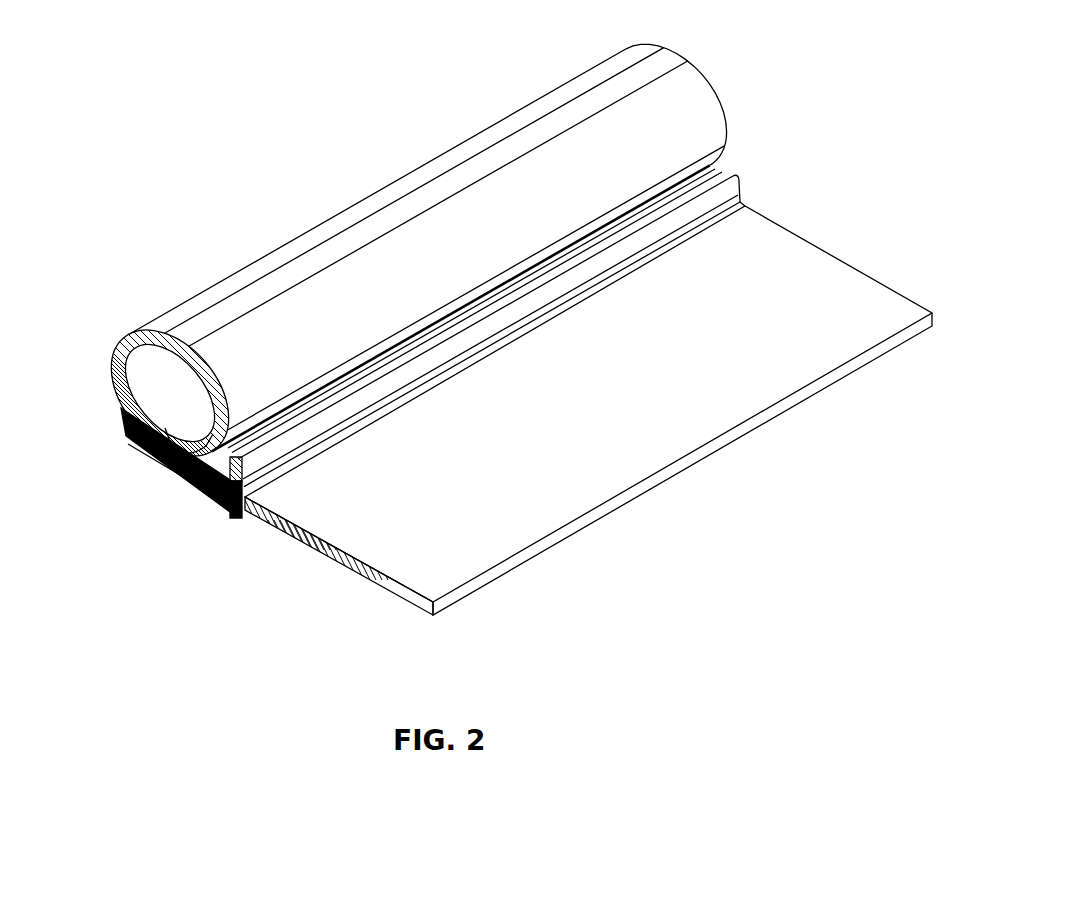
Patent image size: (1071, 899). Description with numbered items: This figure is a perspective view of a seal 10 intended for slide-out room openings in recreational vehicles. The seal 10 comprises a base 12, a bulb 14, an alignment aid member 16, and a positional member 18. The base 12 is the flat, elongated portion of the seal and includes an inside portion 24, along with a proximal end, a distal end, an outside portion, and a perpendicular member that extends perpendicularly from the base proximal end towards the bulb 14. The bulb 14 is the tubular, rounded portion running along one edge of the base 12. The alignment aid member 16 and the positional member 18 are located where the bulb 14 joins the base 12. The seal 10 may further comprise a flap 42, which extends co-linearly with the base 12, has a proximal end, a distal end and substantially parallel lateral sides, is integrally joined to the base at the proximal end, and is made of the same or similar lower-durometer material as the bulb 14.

The seal 10 is at (128, 186).
The base 12 is at (120, 463).
The bulb 14 is at (118, 327).
The alignment aid member 16 is at (221, 531).
The positional member 18 is at (219, 481).
The inside portion 24 is at (112, 429).
The flap 42 is at (300, 554).